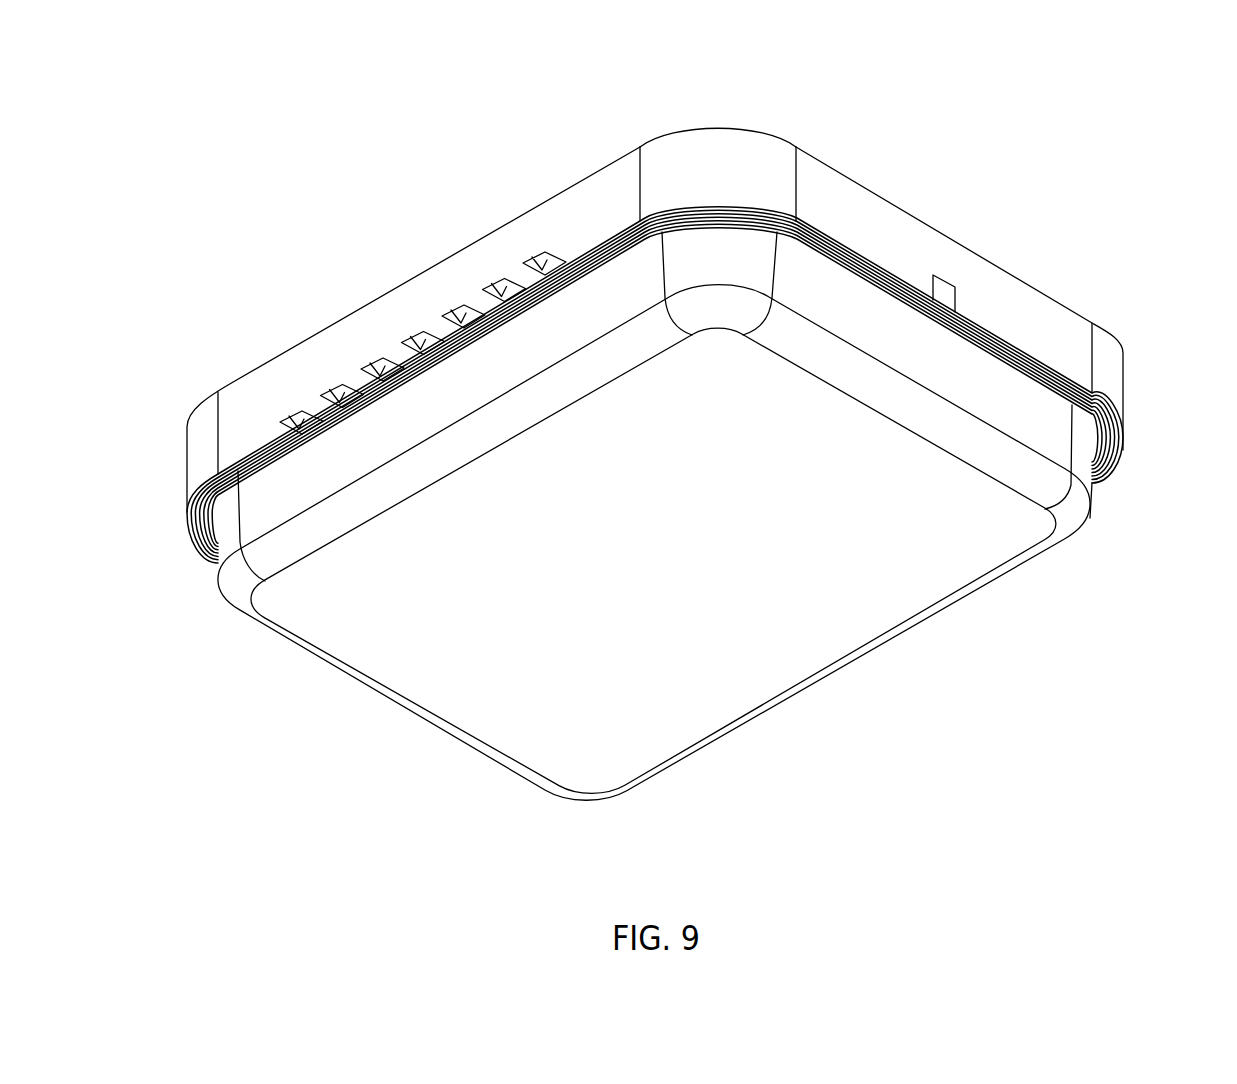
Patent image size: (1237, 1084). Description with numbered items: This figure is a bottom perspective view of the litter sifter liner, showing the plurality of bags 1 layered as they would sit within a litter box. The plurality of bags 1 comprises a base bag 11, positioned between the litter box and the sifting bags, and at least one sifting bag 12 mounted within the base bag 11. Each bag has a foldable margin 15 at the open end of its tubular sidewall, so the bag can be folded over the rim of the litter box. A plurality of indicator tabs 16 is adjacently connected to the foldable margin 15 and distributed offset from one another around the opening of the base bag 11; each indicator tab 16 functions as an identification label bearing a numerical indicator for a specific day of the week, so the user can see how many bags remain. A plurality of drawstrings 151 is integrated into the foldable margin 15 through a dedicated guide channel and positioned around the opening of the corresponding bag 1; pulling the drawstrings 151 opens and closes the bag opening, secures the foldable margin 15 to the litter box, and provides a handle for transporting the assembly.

The bags 1 is at (1057, 517).
The base bag 11 is at (913, 587).
The sifting bag 12 is at (1126, 457).
The foldable margin 15 is at (752, 142).
The drawstrings 151 is at (940, 297).
The indicator tab 16 is at (299, 425).